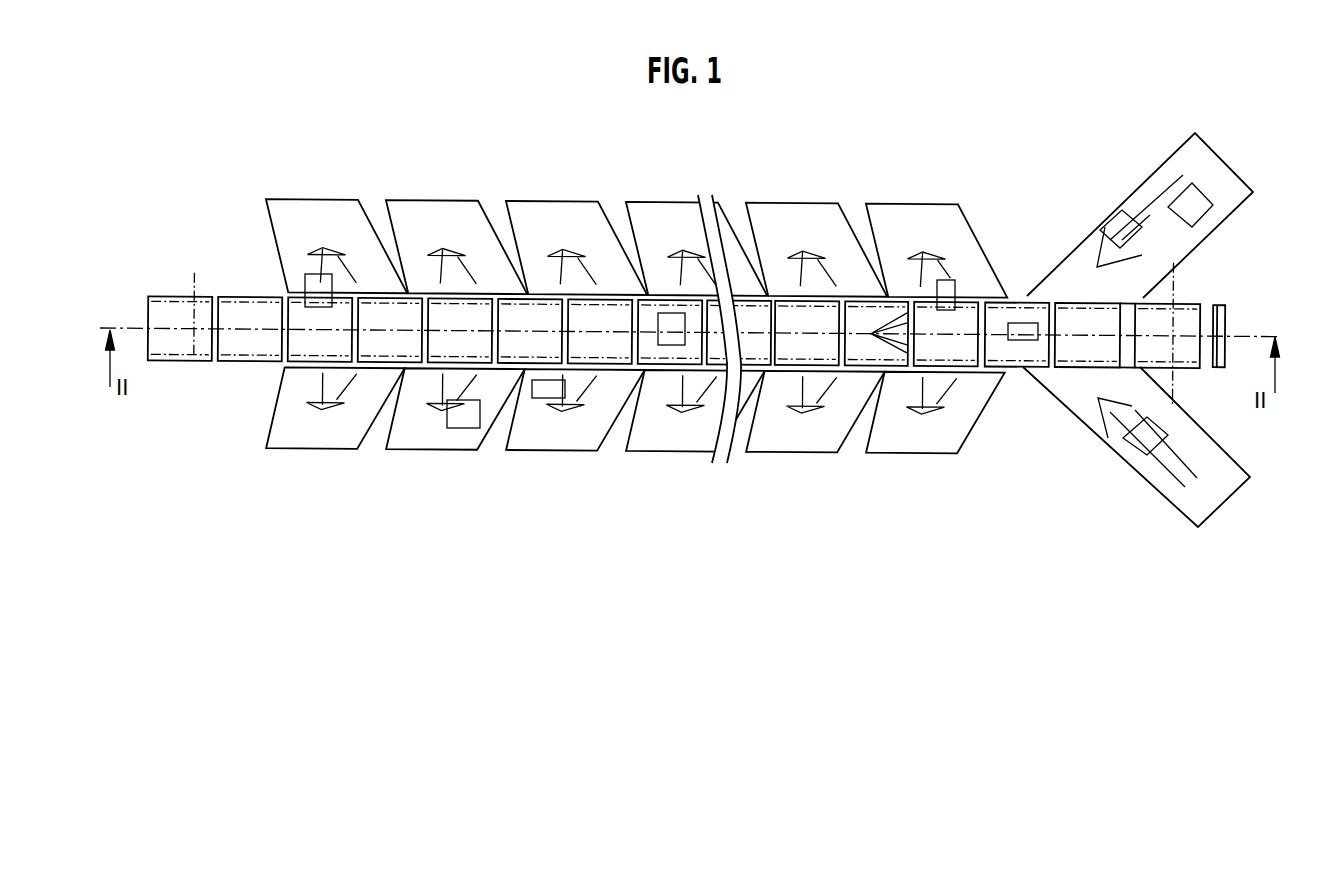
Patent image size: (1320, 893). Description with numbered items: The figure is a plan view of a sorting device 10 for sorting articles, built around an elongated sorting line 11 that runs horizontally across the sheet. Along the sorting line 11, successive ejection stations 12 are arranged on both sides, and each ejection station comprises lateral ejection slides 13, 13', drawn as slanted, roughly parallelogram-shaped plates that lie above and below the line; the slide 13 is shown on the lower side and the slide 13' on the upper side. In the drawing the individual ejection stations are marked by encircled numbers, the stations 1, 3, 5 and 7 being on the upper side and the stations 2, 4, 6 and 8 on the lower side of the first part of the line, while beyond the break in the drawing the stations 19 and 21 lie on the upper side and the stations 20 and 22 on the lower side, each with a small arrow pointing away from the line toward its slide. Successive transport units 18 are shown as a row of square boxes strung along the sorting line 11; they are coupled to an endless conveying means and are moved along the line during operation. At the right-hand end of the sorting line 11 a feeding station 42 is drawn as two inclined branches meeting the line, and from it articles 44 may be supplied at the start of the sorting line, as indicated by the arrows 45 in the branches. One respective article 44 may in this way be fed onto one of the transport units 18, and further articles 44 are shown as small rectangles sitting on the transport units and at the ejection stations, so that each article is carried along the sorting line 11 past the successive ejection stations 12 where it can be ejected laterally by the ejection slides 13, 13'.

The sorting device 10 is at (456, 145).
The sorting line 11 is at (238, 282).
The ejection stations 12 is at (857, 192).
The ejection slide 13 is at (815, 440).
The ejection slide 13' is at (936, 227).
The transport units 18 is at (371, 325).
The feeding station 42 is at (1083, 200).
The articles 44 is at (668, 348).
The arrows 45 is at (1152, 217).
The station 1 is at (336, 246).
The station 2 is at (335, 408).
The station 3 is at (456, 247).
The station 4 is at (455, 409).
The station 5 is at (576, 248).
The station 6 is at (575, 410).
The station 7 is at (696, 249).
The station 8 is at (695, 411).
The station 19 is at (816, 250).
The station 20 is at (815, 412).
The station 21 is at (936, 251).
The station 22 is at (935, 413).